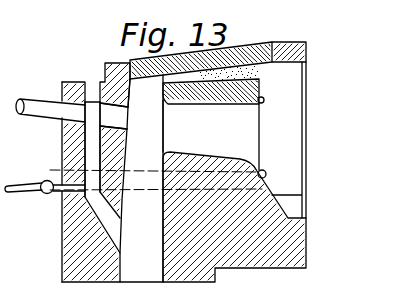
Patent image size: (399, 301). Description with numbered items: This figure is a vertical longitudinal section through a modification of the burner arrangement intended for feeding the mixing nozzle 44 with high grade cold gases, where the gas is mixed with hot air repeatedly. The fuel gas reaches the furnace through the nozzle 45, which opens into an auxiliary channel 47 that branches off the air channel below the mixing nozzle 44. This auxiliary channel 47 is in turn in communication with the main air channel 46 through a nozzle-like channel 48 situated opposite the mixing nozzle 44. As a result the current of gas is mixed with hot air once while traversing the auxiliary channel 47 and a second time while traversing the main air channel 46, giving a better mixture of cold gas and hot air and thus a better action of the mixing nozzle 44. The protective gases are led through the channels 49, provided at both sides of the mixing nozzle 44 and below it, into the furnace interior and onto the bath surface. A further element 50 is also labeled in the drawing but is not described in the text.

The mixing nozzle 44 is at (242, 130).
The nozzle 45 is at (37, 110).
The main air channel 46 is at (145, 168).
The auxiliary channel 47 is at (94, 103).
The nozzle-like channel 48 is at (113, 119).
The channels 49 is at (63, 170).
The casing wall 50 is at (62, 248).